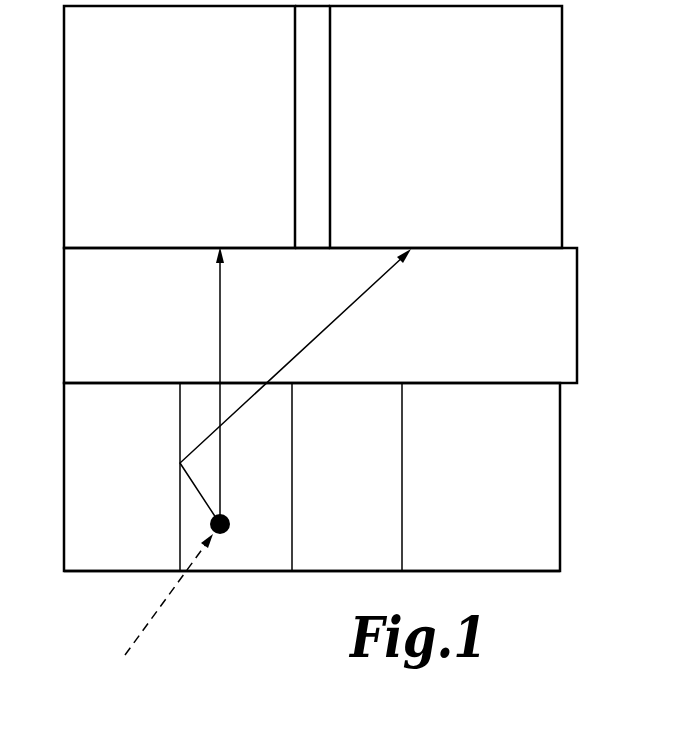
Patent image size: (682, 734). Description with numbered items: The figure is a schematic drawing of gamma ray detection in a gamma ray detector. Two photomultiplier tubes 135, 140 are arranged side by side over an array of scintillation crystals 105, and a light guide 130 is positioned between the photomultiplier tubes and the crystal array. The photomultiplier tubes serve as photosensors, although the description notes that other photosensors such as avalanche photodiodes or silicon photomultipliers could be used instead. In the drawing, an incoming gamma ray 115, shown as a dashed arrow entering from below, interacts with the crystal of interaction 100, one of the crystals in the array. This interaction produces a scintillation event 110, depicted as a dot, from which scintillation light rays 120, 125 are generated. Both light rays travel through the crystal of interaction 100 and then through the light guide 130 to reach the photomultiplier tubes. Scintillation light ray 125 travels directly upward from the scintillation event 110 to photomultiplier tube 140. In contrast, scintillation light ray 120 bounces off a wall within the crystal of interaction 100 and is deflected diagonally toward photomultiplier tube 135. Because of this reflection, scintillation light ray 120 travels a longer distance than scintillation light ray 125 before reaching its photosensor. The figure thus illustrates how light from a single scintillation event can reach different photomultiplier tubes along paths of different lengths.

The crystal of interaction 100 is at (262, 572).
The array of scintillation crystals 105 is at (585, 389).
The scintillation event 110 is at (229, 518).
The gamma ray 115 is at (152, 617).
The scintillation light ray 120 is at (343, 314).
The scintillation light ray 125 is at (222, 301).
The light guide 130 is at (585, 251).
The photomultiplier tube 135 is at (469, 143).
The photomultiplier tube 140 is at (198, 143).